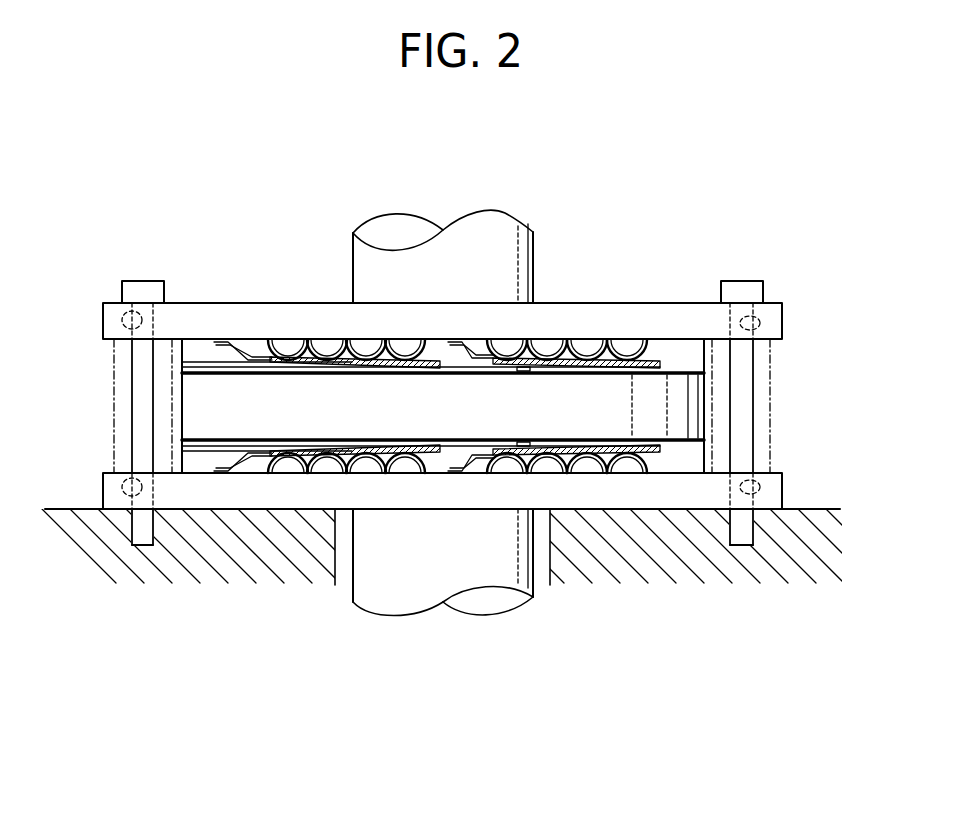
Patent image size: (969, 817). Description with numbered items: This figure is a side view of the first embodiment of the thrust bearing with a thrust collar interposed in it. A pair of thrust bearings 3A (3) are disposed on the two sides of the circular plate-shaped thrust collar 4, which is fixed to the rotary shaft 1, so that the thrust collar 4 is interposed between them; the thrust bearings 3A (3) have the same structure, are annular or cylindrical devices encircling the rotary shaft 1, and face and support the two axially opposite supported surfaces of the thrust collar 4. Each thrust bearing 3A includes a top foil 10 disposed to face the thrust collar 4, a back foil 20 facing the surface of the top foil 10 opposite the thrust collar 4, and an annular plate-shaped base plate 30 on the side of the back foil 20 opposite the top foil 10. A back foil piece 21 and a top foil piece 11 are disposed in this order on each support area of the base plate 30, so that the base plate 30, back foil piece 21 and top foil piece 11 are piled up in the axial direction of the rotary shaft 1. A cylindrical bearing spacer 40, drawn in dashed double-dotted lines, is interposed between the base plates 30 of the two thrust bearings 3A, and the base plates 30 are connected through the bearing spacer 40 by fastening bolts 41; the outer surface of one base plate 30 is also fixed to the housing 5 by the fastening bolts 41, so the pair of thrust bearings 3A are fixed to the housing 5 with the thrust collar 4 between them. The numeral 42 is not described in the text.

The rotary shaft 1 is at (350, 252).
The thrust bearing 3 is at (443, 415).
The thrust bearing 3A is at (647, 252).
The thrust collar 4 is at (680, 403).
The housing 5 is at (219, 555).
The top foil 10 is at (571, 357).
The top foil piece 11 is at (340, 360).
The back foil 20 is at (590, 357).
The back foil piece 21 is at (293, 343).
The base plate 30 is at (677, 318).
The bearing spacer 40 is at (772, 405).
The fastening bolt 41 is at (142, 281).
The nut / washer 42 is at (126, 324).